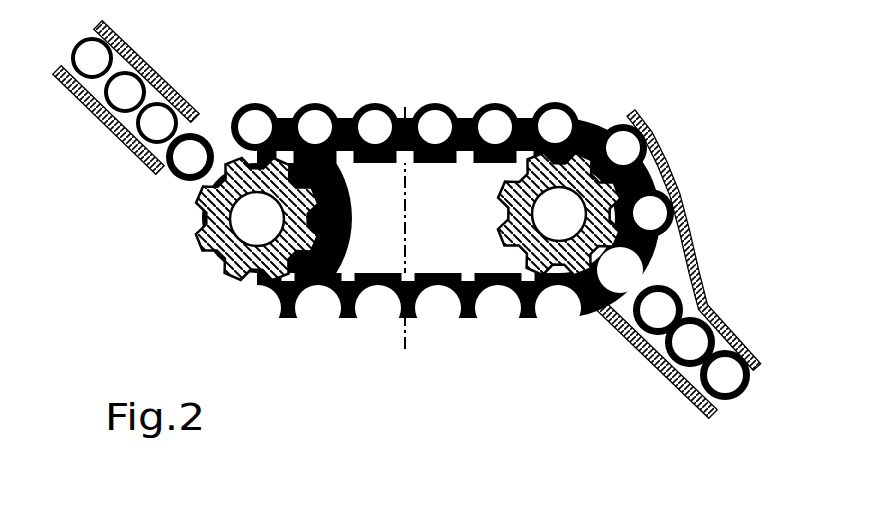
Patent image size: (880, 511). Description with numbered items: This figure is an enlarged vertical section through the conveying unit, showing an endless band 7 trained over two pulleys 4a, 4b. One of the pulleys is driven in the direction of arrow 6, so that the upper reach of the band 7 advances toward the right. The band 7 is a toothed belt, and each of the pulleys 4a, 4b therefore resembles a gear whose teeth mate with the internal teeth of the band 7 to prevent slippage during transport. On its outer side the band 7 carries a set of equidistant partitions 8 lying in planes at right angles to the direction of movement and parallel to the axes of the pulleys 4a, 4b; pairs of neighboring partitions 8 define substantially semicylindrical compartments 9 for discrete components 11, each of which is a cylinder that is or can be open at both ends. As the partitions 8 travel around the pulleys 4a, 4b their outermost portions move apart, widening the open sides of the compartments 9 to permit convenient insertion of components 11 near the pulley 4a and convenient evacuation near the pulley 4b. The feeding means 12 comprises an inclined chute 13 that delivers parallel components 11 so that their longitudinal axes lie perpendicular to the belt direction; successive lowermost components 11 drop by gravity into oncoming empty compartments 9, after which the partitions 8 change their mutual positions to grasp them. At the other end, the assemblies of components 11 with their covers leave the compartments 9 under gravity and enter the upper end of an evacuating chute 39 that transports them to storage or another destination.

The pulley 4a is at (307, 217).
The pulley 4b is at (655, 183).
The arrow 6 is at (185, 228).
The endless band 7 is at (472, 153).
The partitions 8 is at (215, 315).
The compartments 9 is at (196, 286).
The components 11 is at (113, 53).
The feeding means 12 is at (178, 74).
The chute 13 is at (130, 120).
The chute 39 is at (723, 331).